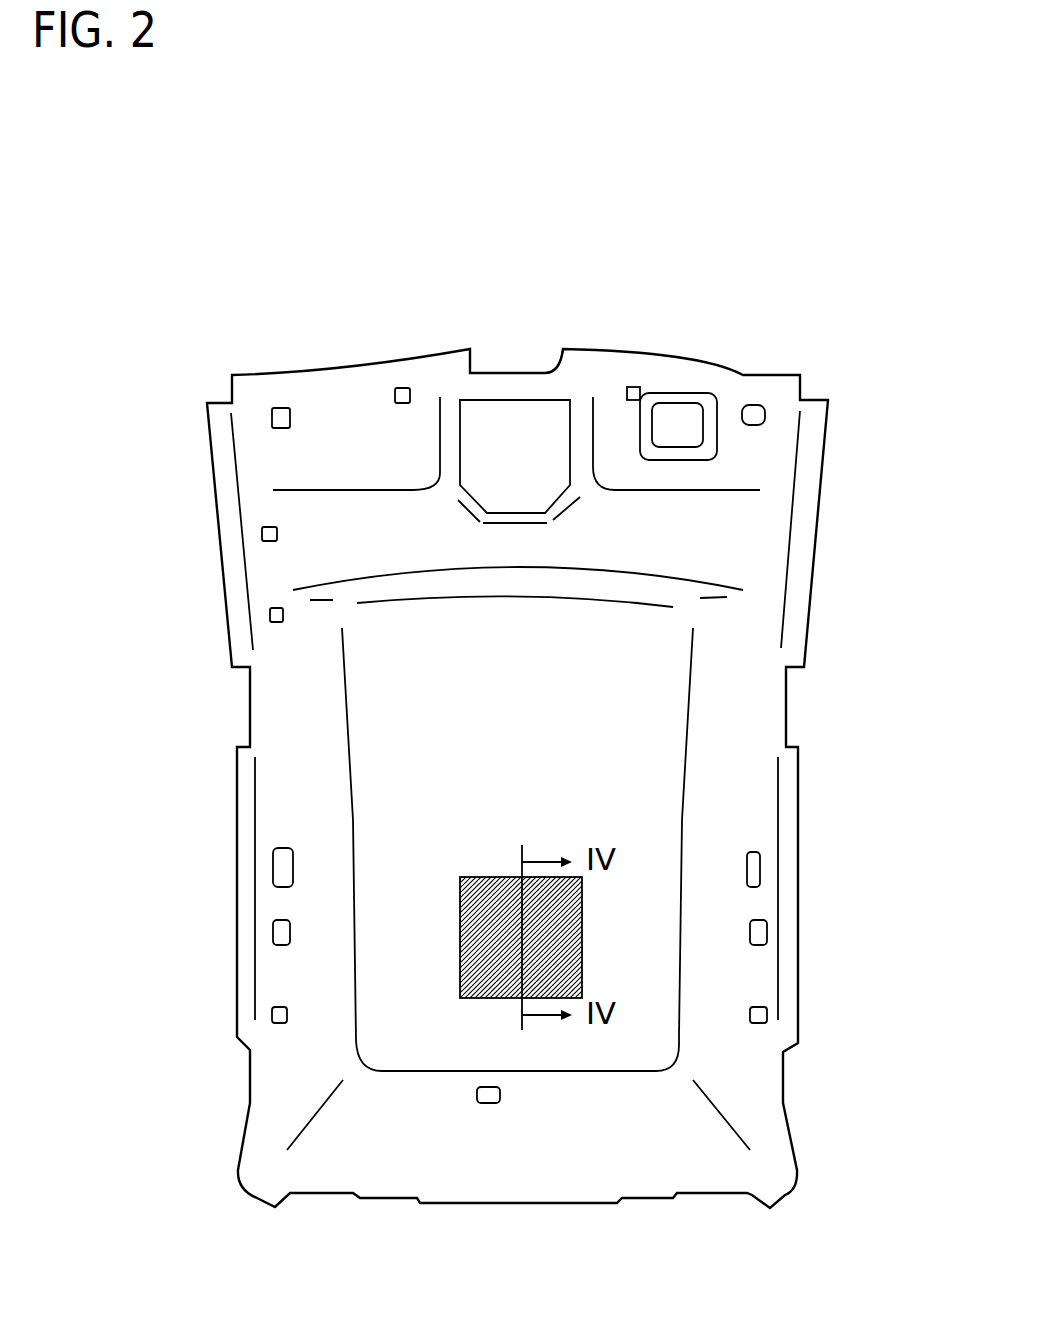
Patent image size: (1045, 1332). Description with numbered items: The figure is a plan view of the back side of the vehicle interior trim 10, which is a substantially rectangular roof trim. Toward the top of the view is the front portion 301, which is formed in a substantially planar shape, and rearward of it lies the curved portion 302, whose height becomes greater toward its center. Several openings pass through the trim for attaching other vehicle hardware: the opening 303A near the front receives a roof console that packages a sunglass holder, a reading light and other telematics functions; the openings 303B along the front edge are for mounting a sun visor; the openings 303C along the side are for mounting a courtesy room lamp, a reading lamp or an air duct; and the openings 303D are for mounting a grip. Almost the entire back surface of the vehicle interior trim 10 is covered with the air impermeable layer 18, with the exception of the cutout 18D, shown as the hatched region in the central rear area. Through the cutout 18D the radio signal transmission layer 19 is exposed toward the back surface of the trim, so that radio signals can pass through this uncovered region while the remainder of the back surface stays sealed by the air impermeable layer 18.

The vehicle interior trim 10 is at (832, 354).
The air impermeable layer 18 is at (627, 757).
The cutout 18D is at (497, 1000).
The radio signal transmission layer 19 is at (462, 965).
The front portion 301 is at (520, 372).
The curved portion 302 is at (517, 802).
The opening 303A is at (543, 430).
The openings 303B is at (297, 410).
The openings 303C is at (760, 868).
The openings 303D is at (763, 1012).